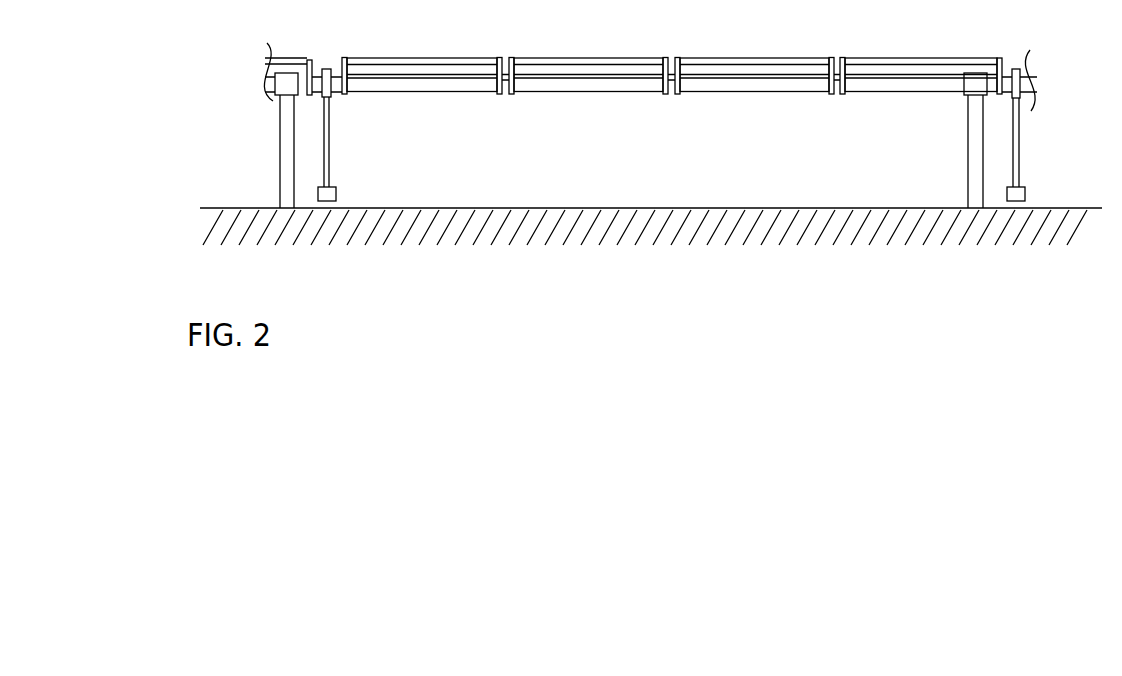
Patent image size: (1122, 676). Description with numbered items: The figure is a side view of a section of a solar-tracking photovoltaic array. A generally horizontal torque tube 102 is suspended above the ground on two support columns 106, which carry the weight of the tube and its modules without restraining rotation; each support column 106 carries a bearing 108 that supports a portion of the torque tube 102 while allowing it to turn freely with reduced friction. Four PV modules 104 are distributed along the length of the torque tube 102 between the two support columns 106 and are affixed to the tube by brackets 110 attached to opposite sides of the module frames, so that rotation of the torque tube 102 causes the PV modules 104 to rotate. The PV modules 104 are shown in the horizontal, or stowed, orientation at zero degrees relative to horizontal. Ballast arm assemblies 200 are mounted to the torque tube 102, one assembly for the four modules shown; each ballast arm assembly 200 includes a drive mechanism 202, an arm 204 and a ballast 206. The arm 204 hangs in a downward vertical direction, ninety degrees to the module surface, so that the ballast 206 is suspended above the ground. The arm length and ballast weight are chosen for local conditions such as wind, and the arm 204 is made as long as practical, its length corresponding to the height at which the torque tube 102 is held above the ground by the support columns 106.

The torque tube 102 is at (463, 92).
The PV module 104 is at (423, 57).
The support column 106 is at (280, 170).
The bearing 108 is at (278, 96).
The bracket 110 is at (511, 96).
The ballast arm assembly 200 is at (718, 136).
The drive mechanism 202 is at (333, 97).
The arm 204 is at (330, 130).
The ballast 206 is at (336, 193).